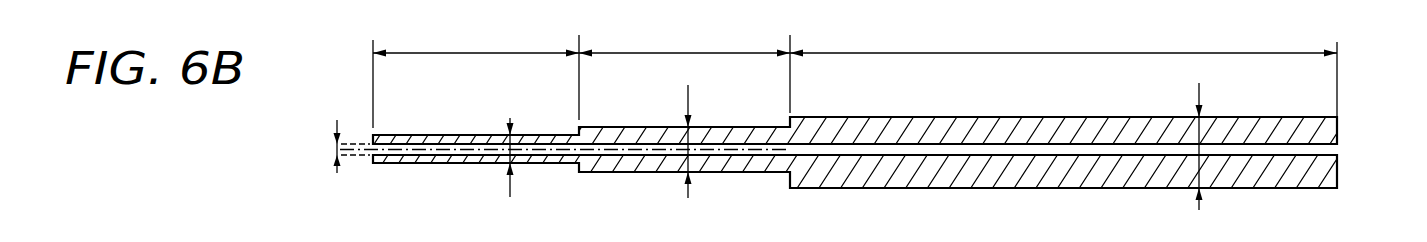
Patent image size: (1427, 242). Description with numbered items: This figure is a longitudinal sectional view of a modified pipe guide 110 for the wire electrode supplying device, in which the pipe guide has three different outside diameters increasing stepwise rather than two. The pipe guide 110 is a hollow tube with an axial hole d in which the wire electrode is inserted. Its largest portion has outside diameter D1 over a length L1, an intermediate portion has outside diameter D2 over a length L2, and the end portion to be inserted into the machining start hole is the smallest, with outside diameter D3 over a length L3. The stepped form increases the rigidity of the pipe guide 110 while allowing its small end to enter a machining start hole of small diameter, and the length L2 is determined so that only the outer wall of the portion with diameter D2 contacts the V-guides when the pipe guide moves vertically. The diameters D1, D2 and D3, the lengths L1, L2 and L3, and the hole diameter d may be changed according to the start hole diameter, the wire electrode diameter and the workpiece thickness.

The pipe guide 110 is at (1338, 128).
The length of the portion having outside diameter D1 L1 is at (1063, 65).
The length of the portion having outside diameter D2 L2 is at (684, 67).
The length of third (smallest-diameter) section L3 is at (476, 71).
The outside diameter of the pipe guide D1 is at (1183, 146).
The outside diameter of the pipe guide D2 is at (672, 141).
The outer diameter of third section D3 is at (493, 149).
The hole d is at (341, 146).